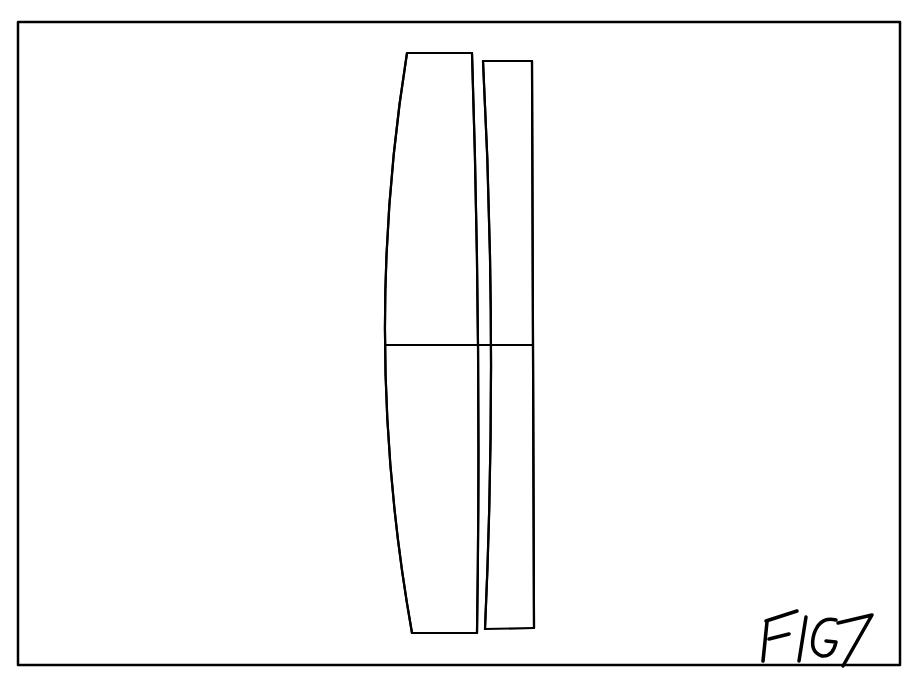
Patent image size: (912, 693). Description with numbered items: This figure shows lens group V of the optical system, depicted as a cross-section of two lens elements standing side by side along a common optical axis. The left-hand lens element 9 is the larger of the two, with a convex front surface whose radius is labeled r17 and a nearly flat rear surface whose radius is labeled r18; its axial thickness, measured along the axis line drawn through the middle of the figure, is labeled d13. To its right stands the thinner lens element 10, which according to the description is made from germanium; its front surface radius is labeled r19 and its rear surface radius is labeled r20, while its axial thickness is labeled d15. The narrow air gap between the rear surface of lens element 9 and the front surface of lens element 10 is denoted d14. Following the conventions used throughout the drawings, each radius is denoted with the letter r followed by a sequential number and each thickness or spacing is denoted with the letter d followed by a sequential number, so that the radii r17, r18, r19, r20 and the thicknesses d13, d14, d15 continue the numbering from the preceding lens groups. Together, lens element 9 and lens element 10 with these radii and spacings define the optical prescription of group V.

The lens element 9 is at (427, 564).
The lens element 10 is at (530, 563).
The radius r17 is at (381, 162).
The radius r18 is at (457, 210).
The radius r19 is at (509, 148).
The radius r20 is at (557, 205).
The thickness d13 is at (423, 358).
The thickness d14 is at (502, 358).
The thickness d15 is at (525, 331).
The group V is at (115, 141).